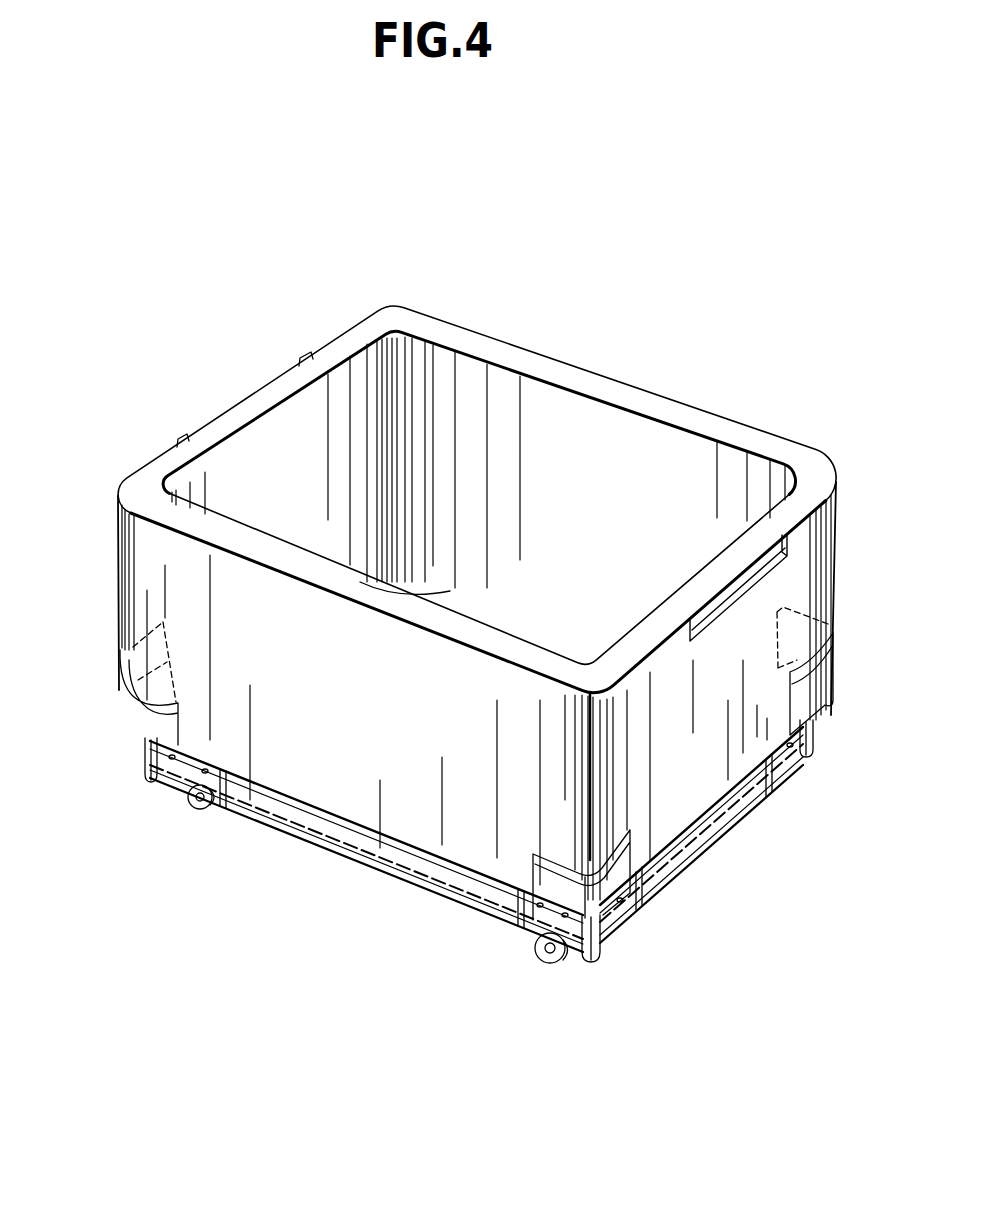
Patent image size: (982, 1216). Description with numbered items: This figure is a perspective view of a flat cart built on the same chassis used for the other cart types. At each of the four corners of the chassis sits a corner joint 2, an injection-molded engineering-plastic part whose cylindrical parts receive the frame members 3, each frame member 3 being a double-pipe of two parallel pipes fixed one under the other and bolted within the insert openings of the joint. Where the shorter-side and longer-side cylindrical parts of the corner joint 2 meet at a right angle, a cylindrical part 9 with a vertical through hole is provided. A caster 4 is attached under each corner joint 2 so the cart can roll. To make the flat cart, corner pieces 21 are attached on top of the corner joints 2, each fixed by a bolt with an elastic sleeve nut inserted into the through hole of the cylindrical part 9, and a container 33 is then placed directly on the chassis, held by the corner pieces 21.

The container 33 is at (622, 395).
The corner piece 21 is at (135, 708).
The frame member 3 is at (373, 860).
The cylindrical part 9 is at (590, 960).
The caster 4 is at (548, 960).
The corner joint 2 is at (140, 757).